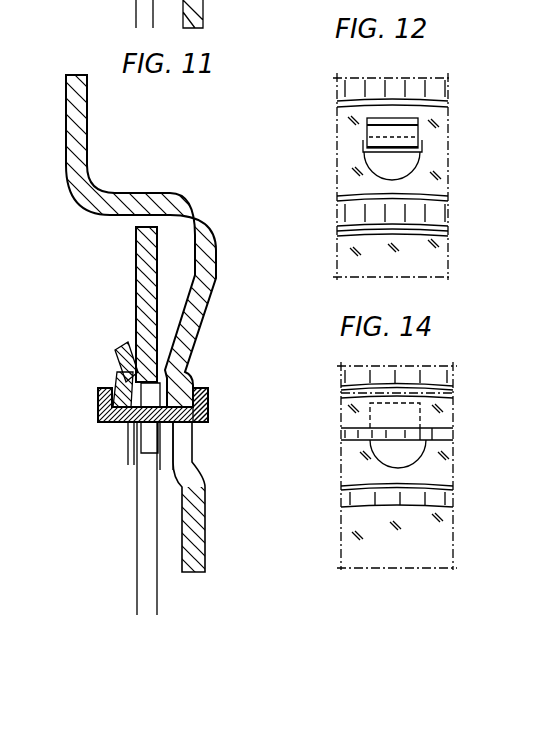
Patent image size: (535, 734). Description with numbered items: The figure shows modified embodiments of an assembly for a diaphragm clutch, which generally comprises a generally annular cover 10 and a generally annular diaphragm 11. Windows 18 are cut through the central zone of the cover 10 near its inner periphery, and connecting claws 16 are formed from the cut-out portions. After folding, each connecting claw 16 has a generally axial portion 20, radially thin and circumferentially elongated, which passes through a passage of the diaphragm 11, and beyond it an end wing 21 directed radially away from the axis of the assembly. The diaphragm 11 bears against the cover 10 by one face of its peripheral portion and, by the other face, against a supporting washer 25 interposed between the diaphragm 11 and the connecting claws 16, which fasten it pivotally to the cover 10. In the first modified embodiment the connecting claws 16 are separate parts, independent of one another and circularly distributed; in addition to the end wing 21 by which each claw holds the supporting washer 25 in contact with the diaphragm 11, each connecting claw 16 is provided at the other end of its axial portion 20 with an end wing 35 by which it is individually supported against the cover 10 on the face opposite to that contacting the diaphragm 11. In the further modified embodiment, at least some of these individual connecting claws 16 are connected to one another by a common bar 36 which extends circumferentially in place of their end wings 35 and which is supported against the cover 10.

In FIG. 11, the cover 10 is at (196, 192).
In FIG. 11, the diaphragm 11 is at (135, 249).
In FIG. 11, the connecting claw 16 is at (104, 424).
In FIG. 12, the connecting claw 16 is at (400, 155).
In FIG. 14, the connecting claw 16 is at (410, 440).
In FIG. 11, the window 18 is at (186, 442).
In FIG. 11, the axial portion 20 is at (125, 428).
In FIG. 11, the end wing 21 is at (104, 392).
In FIG. 11, the supporting washer 25 is at (113, 354).
In FIG. 11, the end wing 35 is at (205, 400).
In FIG. 12, the end wing 35 is at (410, 127).
In FIG. 14, the common bar 36 is at (437, 436).